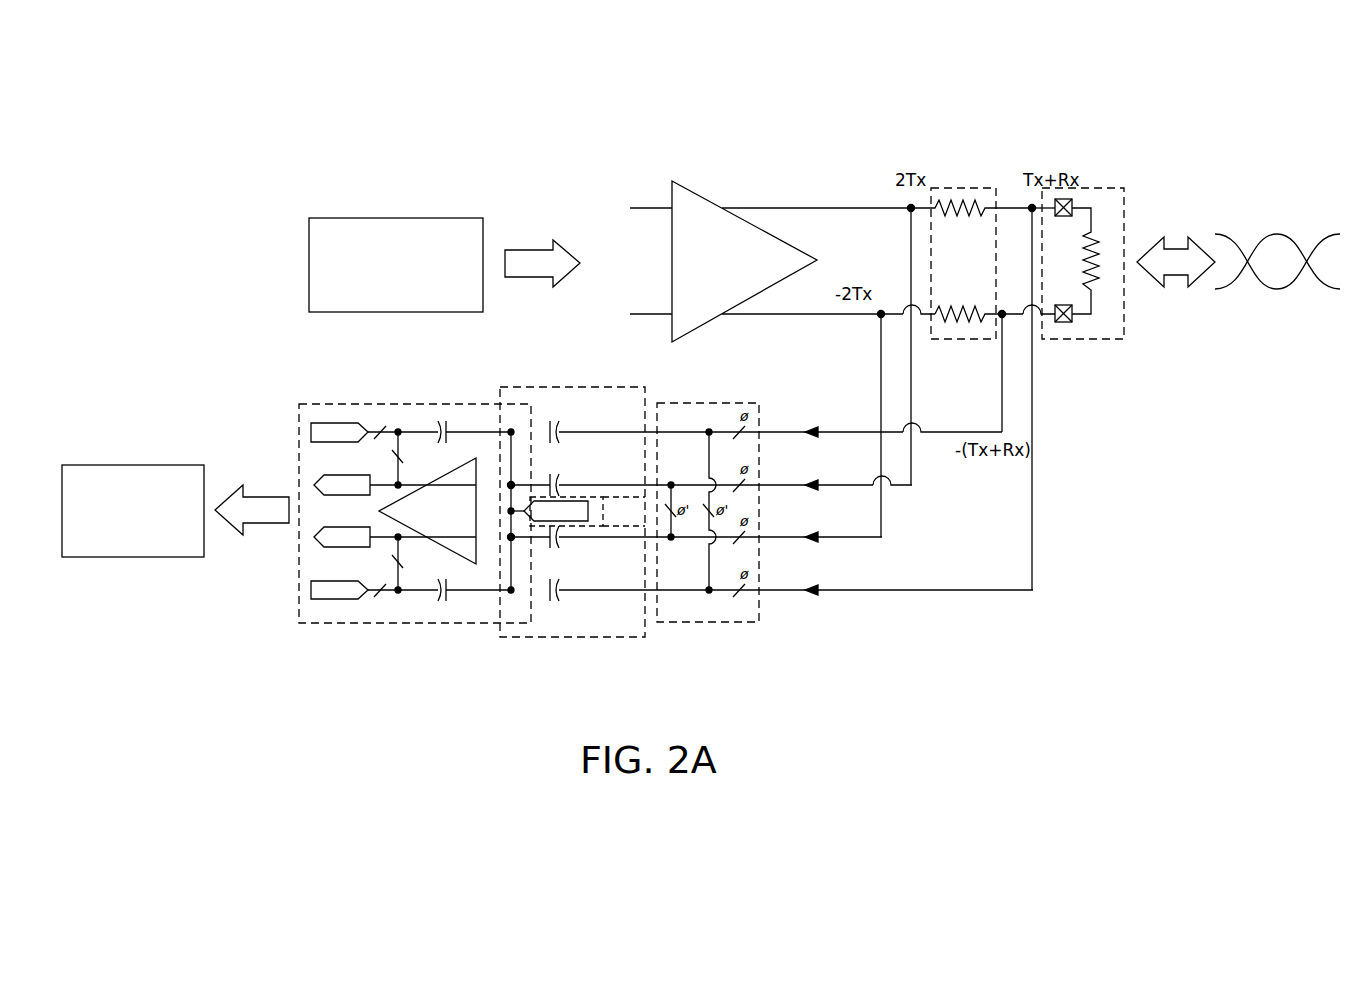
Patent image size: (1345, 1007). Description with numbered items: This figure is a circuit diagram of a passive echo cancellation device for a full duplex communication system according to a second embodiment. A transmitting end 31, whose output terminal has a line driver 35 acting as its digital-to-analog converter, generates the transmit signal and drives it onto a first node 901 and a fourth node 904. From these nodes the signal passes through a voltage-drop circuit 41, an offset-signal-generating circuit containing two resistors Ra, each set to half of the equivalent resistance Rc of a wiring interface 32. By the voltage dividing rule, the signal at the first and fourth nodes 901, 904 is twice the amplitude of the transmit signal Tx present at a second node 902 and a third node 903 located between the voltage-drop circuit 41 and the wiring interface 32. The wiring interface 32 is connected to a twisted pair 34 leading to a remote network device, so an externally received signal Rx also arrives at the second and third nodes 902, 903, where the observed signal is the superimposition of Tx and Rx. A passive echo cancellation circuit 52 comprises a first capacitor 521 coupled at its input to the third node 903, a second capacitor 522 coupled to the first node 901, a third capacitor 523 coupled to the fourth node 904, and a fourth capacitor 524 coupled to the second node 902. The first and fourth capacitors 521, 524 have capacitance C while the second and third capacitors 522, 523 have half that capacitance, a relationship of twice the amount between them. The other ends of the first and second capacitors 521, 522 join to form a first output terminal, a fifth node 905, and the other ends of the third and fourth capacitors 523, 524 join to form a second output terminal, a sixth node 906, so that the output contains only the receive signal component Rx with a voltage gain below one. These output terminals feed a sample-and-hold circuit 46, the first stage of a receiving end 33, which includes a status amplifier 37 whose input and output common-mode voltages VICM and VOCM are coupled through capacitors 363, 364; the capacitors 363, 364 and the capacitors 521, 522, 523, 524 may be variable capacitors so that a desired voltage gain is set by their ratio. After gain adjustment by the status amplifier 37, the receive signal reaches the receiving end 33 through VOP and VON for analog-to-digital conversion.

The transmitting end 31 is at (416, 217).
The receiving end 33 is at (137, 557).
The twisted pair 34 is at (1275, 233).
The line driver 35 is at (709, 218).
The wiring interface 32 is at (1070, 340).
The voltage-drop circuit 41 is at (972, 188).
The sample-and-hold circuit 46 is at (415, 516).
The status amplifier 37 is at (427, 487).
The passive echo cancellation circuit 52 is at (597, 534).
The capacitor 363 is at (447, 420).
The capacitor 364 is at (447, 600).
The first capacitor 521 is at (558, 425).
The second capacitor 522 is at (558, 477).
The third capacitor 523 is at (558, 548).
The fourth capacitor 524 is at (562, 600).
The first node 901 is at (910, 207).
The second node 902 is at (1031, 207).
The third node 903 is at (1002, 317).
The fourth node 904 is at (881, 310).
The fifth node 905 is at (509, 484).
The sixth node 906 is at (513, 541).